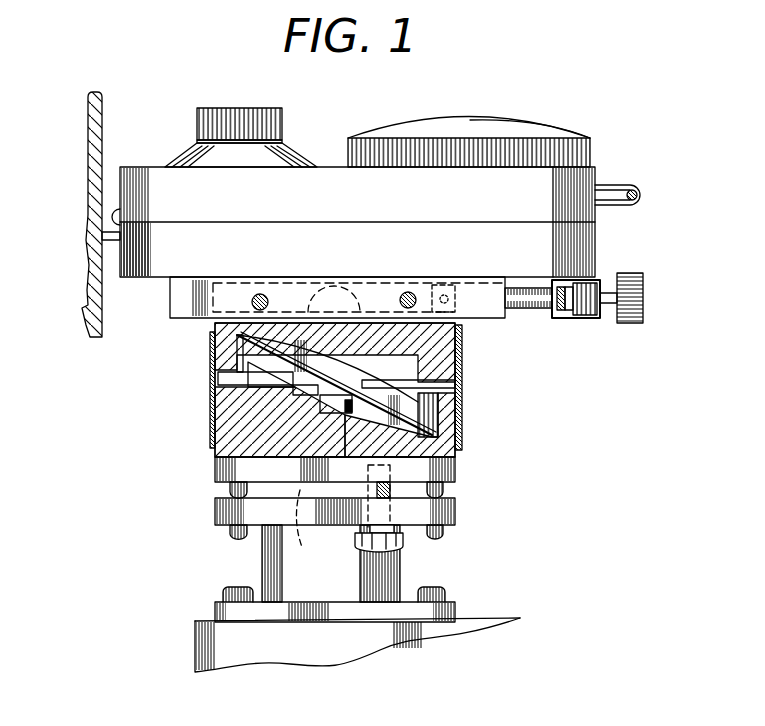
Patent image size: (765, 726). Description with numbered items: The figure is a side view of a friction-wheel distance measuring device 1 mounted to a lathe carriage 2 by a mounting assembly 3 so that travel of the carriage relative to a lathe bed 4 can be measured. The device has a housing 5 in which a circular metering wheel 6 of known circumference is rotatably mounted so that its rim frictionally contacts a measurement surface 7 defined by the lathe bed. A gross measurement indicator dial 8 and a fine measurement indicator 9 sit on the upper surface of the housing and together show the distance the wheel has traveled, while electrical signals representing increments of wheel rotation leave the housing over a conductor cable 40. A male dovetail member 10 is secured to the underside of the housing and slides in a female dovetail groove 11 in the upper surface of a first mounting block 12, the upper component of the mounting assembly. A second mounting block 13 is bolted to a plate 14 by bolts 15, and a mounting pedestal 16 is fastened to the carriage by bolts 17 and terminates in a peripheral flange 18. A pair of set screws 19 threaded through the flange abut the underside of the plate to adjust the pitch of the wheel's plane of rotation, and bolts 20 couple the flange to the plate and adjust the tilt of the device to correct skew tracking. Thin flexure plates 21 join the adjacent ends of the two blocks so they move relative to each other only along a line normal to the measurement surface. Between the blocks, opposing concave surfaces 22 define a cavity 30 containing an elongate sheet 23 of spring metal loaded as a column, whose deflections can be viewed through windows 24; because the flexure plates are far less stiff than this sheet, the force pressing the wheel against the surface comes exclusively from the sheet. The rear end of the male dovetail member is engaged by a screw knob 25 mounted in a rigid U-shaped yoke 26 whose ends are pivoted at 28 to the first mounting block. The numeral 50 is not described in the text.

The friction-wheel distance measuring device 1 is at (318, 115).
The lathe carriage 2 is at (483, 478).
The mounting assembly 3 is at (120, 278).
The lathe bed 4 is at (68, 278).
The housing 5 is at (596, 246).
The metering wheel 6 is at (102, 214).
The measurement surface 7 is at (105, 336).
The gross measurement indicator dial 8 is at (230, 108).
The fine measurement indicator 9 is at (530, 125).
The male dovetail member 10 is at (172, 262).
The female dovetail groove 11 is at (207, 320).
The first mounting block 12 is at (213, 345).
The second mounting block 13 is at (210, 462).
The plate 14 is at (213, 477).
The bolts 15 is at (343, 512).
The mounting pedestal 16 is at (270, 565).
The bolts 17 is at (235, 588).
The peripheral flange 18 is at (455, 512).
The set screws 19 is at (230, 533).
The bolts 20 is at (400, 540).
The flexure plates 21 is at (210, 420).
The concave surfaces 22 is at (425, 378).
The sheet of spring metal 23 is at (405, 412).
The windows 24 is at (430, 362).
The screw knob 25 is at (635, 325).
The U-shaped yoke 26 is at (552, 318).
The pivot 28 is at (445, 285).
The cavity 30 is at (215, 402).
The conductor cable 40 is at (620, 187).
The screws 50 is at (267, 298).